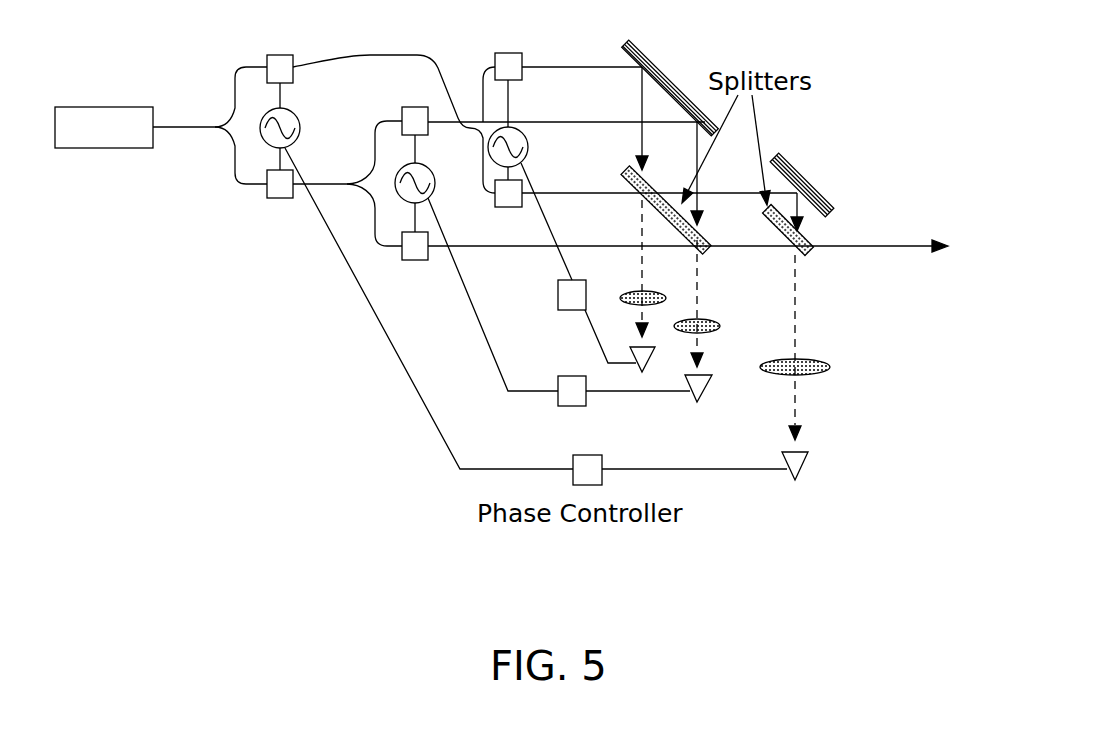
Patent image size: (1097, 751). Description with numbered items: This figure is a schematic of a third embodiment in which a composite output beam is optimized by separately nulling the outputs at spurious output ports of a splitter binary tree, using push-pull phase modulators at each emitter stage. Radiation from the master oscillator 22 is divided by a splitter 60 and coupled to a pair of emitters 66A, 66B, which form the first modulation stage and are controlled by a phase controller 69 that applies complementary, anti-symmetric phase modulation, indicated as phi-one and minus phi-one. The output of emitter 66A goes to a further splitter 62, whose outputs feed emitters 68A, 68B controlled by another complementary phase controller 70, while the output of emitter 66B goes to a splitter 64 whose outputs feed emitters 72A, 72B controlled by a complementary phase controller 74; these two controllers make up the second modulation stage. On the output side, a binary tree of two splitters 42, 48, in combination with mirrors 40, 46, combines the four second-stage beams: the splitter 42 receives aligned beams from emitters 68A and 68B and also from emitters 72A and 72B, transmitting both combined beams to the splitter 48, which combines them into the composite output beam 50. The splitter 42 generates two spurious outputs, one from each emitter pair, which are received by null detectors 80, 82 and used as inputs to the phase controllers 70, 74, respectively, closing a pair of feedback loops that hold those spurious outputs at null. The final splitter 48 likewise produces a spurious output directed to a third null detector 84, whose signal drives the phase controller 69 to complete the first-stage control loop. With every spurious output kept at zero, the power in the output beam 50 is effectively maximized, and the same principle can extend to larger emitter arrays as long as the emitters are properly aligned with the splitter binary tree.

The master oscillator 22 is at (122, 148).
The splitter 60 is at (214, 103).
The splitter 62 is at (465, 104).
The splitter 64 is at (349, 162).
The emitter 66A is at (267, 56).
The emitter 66B is at (267, 198).
The emitter 72A is at (402, 111).
The emitter 72B is at (400, 261).
The emitter 68A is at (522, 56).
The emitter 68B is at (522, 181).
The mirror 40 is at (660, 68).
The splitter 42 is at (703, 252).
The mirror 46 is at (813, 185).
The splitter 48 is at (812, 243).
The composite output beam 50 is at (900, 243).
The phase controller 69 is at (573, 458).
The phase controller 70 is at (558, 286).
The phase controller 74 is at (558, 378).
The null detector 80 is at (647, 357).
The null detector 82 is at (705, 388).
The null detector 84 is at (808, 453).